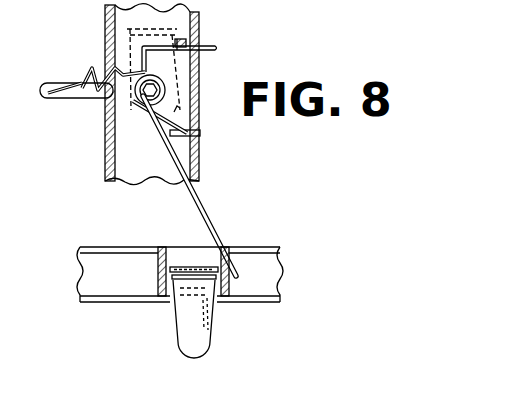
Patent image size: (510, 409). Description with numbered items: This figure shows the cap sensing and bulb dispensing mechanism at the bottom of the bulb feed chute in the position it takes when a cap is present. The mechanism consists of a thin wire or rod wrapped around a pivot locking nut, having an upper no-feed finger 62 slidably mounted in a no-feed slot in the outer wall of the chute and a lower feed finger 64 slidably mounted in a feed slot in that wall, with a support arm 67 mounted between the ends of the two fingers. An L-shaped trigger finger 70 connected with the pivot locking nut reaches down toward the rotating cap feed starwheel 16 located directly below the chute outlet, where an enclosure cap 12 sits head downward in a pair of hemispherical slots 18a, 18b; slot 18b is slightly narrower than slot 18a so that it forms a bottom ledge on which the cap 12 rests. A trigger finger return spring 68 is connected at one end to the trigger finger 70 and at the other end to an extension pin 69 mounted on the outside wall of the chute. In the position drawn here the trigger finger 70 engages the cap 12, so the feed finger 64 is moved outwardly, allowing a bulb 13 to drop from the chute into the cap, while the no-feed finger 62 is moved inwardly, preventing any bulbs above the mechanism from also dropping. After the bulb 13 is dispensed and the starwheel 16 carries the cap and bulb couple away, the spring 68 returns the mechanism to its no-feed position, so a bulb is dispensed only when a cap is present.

The enclosure cap 12 is at (233, 282).
The sample tube 13 is at (185, 322).
The cap feed starwheel 16 is at (90, 248).
The hemispherical slot 18a is at (162, 231).
The hemispherical slot 18b is at (165, 300).
The no-feed finger 62 is at (208, 45).
The feed finger 64 is at (193, 117).
The support arm 67 is at (200, 74).
The trigger finger return spring 68 is at (93, 72).
The extension pin 69 is at (73, 100).
The trigger finger 70 is at (215, 222).